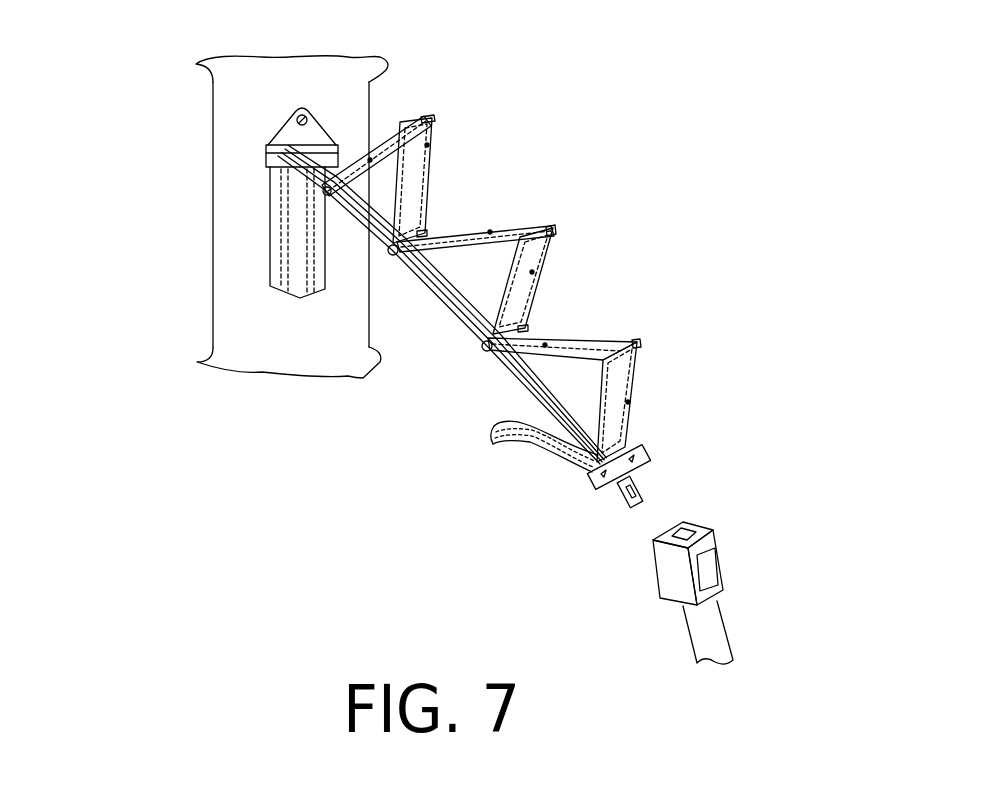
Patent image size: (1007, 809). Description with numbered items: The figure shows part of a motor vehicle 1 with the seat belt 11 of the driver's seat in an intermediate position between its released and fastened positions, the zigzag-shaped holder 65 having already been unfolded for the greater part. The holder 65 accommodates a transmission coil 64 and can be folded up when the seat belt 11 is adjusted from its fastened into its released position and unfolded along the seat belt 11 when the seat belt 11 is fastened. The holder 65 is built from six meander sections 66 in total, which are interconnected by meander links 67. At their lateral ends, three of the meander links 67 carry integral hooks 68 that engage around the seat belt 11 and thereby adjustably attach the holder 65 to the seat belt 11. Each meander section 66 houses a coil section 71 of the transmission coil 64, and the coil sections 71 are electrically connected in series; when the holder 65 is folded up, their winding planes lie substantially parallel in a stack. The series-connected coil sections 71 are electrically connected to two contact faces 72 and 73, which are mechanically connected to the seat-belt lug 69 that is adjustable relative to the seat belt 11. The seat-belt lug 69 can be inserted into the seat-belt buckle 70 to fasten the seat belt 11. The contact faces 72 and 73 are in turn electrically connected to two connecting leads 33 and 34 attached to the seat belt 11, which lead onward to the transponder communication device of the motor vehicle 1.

The motor vehicle 1 is at (192, 118).
The seat belt 11 is at (246, 242).
The connecting lead 33 is at (453, 285).
The connecting lead 34 is at (477, 290).
The transmission coil 64 is at (597, 326).
The meandrous or zigzag-shaped holder 65 is at (448, 108).
The meander section 66 is at (378, 138).
The meander link 67 is at (430, 118).
The hook 68 is at (329, 195).
The seat-belt lug 69 is at (615, 510).
The seat-belt buckle 70 is at (796, 584).
The coil section 71 is at (370, 160).
The contact face 72 is at (597, 484).
The contact face 73 is at (650, 455).